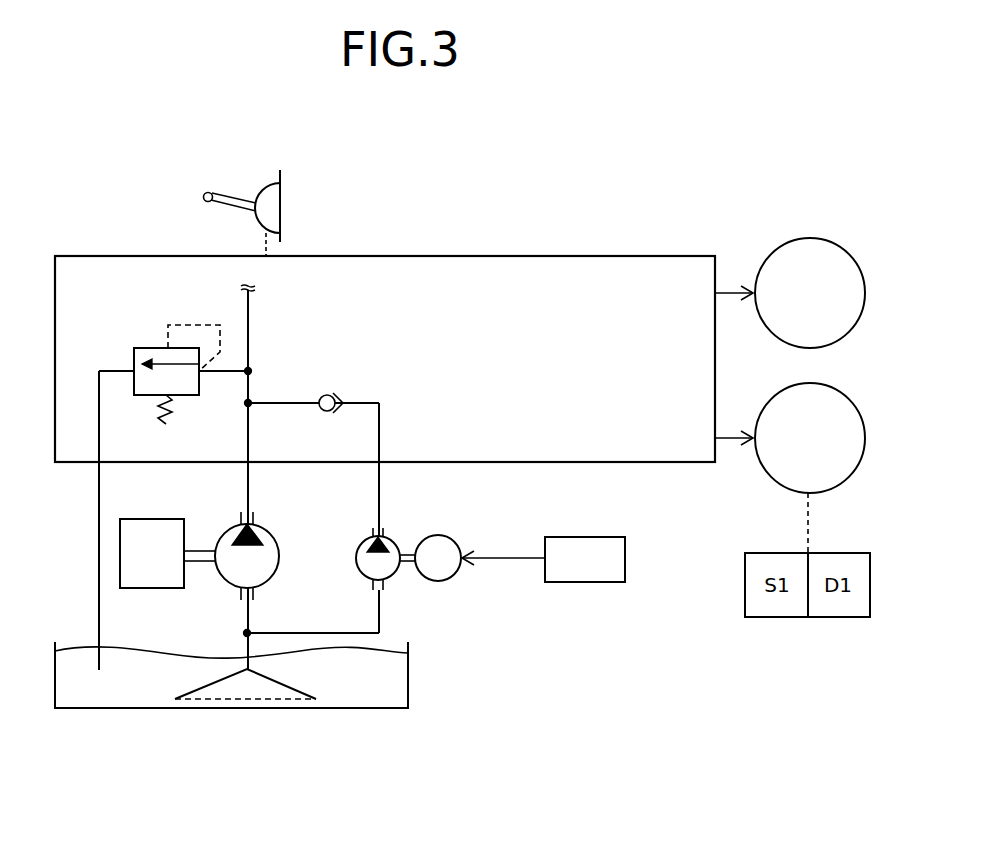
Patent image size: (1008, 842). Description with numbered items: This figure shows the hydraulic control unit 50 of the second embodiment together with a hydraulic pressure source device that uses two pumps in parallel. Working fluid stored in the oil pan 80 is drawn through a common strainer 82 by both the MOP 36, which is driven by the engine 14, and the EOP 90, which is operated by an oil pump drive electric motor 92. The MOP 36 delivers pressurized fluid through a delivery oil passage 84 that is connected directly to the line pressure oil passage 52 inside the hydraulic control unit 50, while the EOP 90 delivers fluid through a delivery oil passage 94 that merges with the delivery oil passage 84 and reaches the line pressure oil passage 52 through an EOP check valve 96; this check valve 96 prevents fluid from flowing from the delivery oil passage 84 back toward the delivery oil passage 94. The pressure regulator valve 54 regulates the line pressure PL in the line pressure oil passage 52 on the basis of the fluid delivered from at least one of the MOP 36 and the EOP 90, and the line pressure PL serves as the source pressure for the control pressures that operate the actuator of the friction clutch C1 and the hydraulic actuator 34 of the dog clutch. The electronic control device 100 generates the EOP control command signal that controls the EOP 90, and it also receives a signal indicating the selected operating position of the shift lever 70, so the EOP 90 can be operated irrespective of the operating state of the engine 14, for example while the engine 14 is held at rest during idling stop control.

The engine 14 is at (143, 578).
The hydraulic actuator 34 is at (815, 397).
The MOP 36 is at (263, 565).
The hydraulic control unit 50 is at (450, 268).
The line pressure oil passage 52 is at (249, 337).
The pressure regulator valve 54 is at (148, 352).
The shift lever 70 is at (221, 188).
The oil pan 80 is at (340, 698).
The strainer 82 is at (260, 688).
The delivery oil passage 84 is at (249, 483).
The EOP 90 is at (388, 570).
The oil pump drive electric motor 92 is at (438, 575).
The delivery oil passage 94 is at (380, 485).
The EOP check valve 96 is at (320, 410).
The electronic control device 100 is at (573, 550).
The friction clutch C1 is at (801, 214).
The line pressure PL is at (262, 477).